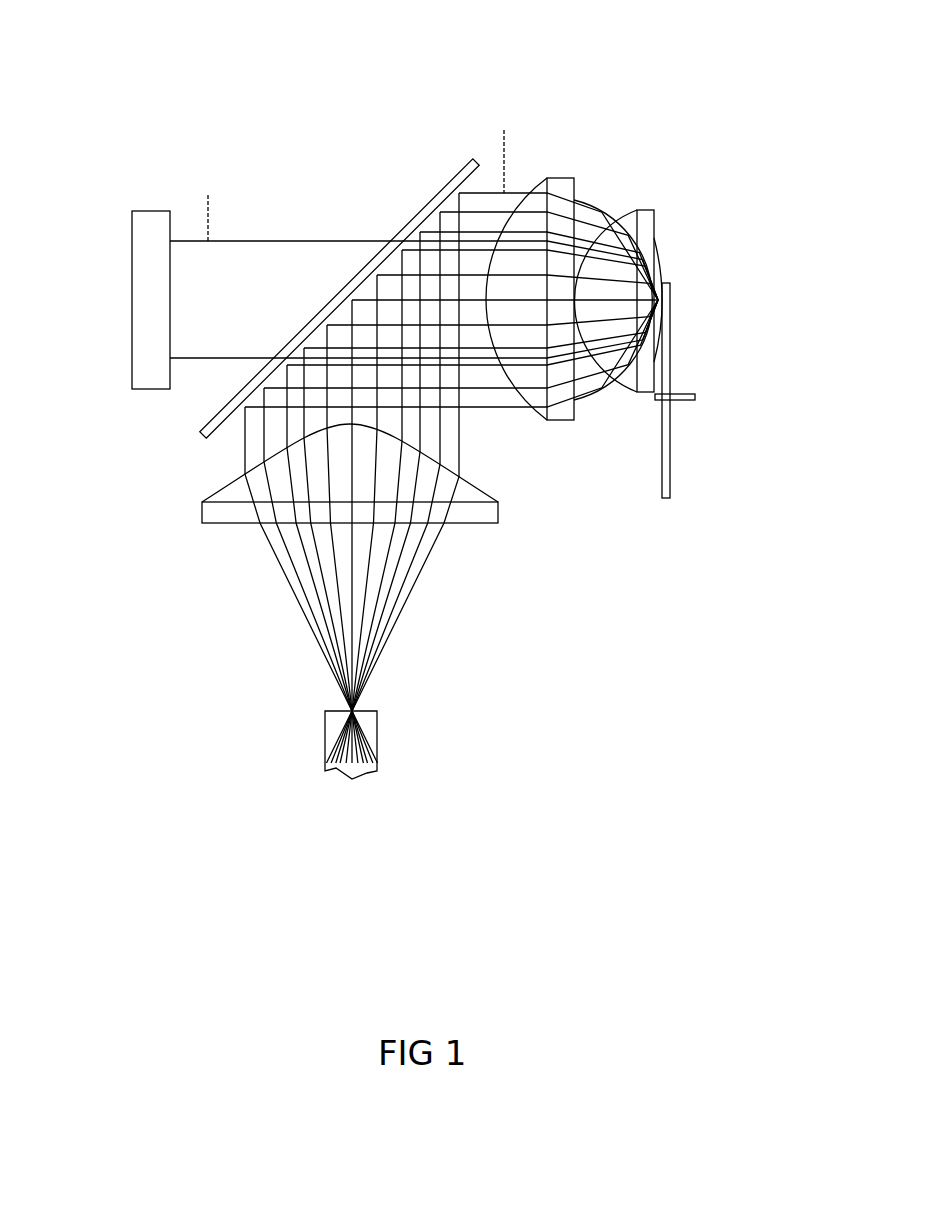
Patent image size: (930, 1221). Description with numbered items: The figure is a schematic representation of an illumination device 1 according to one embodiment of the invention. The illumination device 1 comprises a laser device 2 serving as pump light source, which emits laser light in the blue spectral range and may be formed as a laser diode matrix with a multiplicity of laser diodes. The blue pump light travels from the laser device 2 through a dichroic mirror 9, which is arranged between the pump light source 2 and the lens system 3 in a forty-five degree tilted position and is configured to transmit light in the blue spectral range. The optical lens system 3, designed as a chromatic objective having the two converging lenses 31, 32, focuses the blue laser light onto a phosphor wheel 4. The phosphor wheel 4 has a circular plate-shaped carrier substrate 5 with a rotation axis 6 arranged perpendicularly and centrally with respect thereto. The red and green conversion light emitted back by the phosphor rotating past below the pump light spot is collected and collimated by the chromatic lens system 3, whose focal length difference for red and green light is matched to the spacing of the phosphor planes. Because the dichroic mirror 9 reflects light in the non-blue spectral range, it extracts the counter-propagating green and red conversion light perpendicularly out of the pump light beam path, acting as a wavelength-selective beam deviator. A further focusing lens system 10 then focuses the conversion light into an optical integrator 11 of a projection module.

The illumination device 1 is at (319, 101).
The laser device 2 is at (132, 296).
The optical lens system 3 is at (673, 78).
The converging lens 31 is at (563, 178).
The converging lens 32 is at (647, 210).
The phosphor wheel 4 is at (665, 508).
The carrier substrate 5 is at (672, 463).
The rotation axis 6 is at (697, 396).
The dichroic mirror 9 is at (340, 292).
The focusing lens system 10 is at (200, 510).
The optical integrator 11 is at (379, 732).